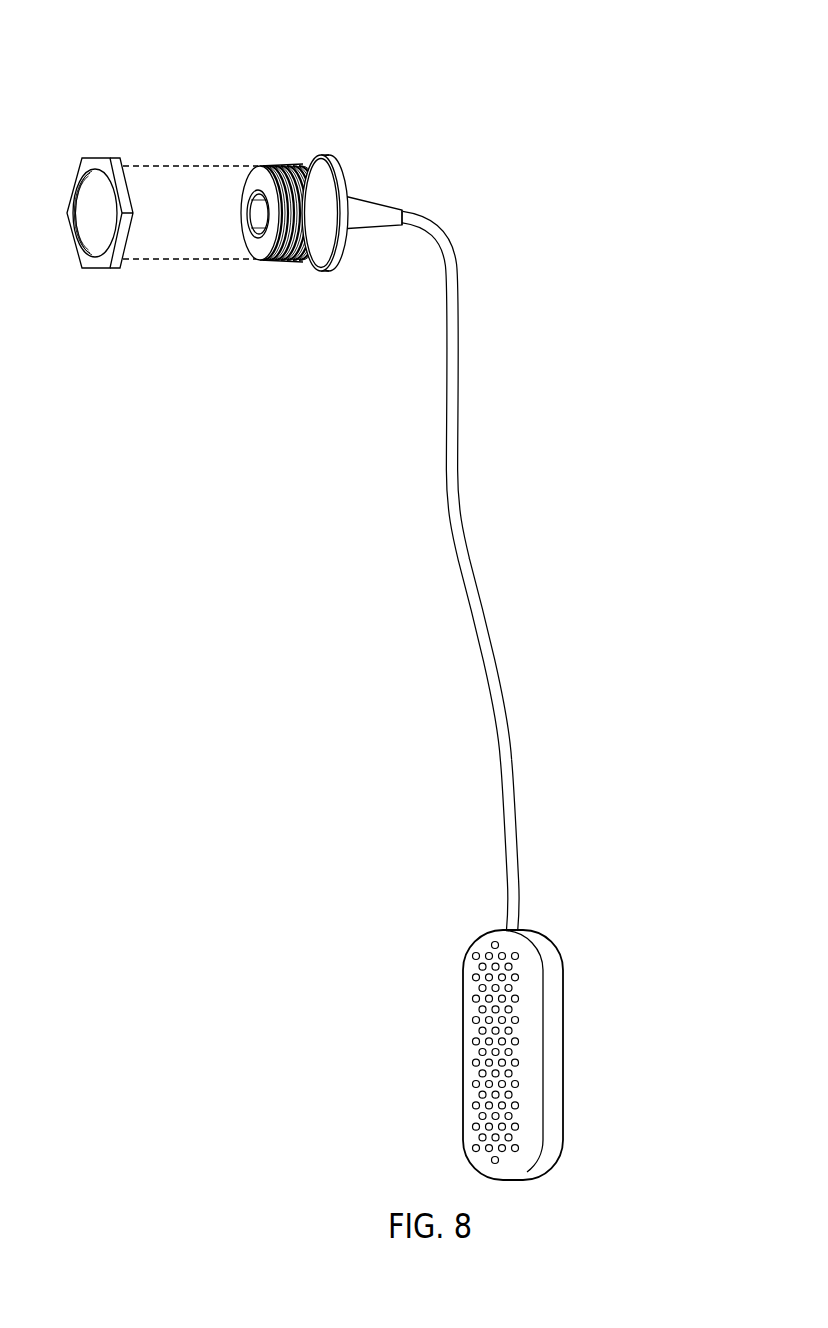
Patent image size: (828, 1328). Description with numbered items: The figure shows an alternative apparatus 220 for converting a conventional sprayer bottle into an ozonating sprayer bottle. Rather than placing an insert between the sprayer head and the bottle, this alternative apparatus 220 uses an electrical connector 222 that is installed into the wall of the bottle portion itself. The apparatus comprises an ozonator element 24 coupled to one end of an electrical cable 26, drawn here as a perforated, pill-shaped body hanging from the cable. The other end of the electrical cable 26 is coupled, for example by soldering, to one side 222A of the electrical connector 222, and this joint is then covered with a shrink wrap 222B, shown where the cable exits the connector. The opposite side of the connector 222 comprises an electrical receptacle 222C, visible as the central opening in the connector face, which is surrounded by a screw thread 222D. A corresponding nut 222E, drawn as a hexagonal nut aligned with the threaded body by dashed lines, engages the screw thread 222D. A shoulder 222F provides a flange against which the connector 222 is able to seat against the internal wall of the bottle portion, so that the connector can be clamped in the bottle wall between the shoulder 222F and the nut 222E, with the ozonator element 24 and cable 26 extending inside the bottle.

The alternative apparatus 220 is at (632, 195).
The electrical connector 222 is at (268, 153).
The one side of the electrical connector 222A is at (357, 183).
The shrink wrap 222B is at (397, 206).
The electrical receptacle 222C is at (257, 230).
The screw thread 222D is at (290, 257).
The nut 222E is at (87, 165).
The shoulder 222F is at (347, 242).
The electrical cable 26 is at (490, 668).
The ozonator element 24 is at (587, 1005).